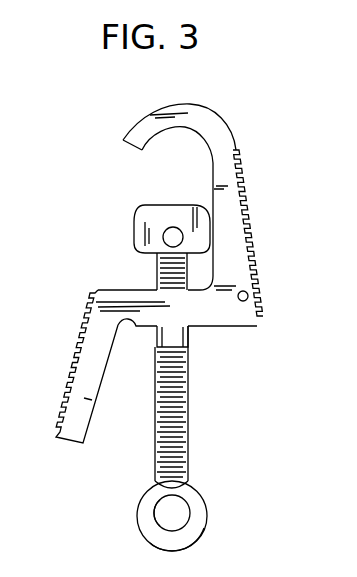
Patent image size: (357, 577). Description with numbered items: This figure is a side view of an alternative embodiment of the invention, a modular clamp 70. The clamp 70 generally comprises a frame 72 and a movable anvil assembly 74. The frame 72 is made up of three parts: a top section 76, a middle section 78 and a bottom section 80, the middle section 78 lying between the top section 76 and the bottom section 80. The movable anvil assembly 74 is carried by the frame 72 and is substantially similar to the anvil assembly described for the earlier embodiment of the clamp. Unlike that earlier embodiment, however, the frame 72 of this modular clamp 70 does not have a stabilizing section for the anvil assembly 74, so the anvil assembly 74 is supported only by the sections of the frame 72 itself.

The modular clamp 70 is at (80, 221).
The frame 72 is at (249, 328).
The movable anvil assembly 74 is at (188, 437).
The top section 76 is at (224, 130).
The middle section 78 is at (211, 328).
The bottom section 80 is at (87, 440).